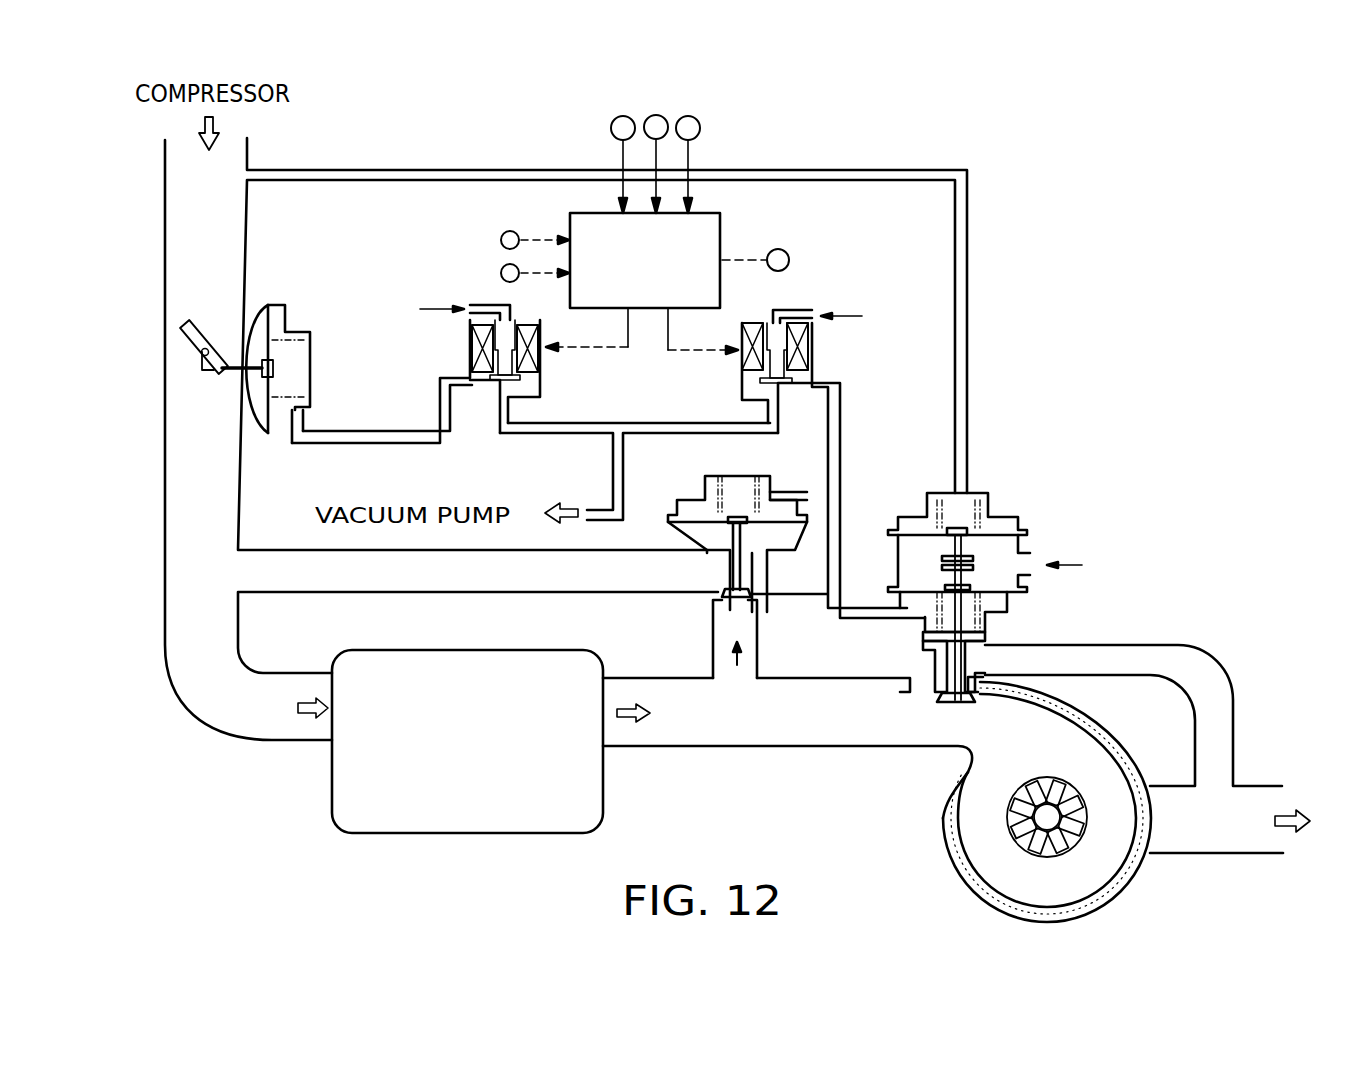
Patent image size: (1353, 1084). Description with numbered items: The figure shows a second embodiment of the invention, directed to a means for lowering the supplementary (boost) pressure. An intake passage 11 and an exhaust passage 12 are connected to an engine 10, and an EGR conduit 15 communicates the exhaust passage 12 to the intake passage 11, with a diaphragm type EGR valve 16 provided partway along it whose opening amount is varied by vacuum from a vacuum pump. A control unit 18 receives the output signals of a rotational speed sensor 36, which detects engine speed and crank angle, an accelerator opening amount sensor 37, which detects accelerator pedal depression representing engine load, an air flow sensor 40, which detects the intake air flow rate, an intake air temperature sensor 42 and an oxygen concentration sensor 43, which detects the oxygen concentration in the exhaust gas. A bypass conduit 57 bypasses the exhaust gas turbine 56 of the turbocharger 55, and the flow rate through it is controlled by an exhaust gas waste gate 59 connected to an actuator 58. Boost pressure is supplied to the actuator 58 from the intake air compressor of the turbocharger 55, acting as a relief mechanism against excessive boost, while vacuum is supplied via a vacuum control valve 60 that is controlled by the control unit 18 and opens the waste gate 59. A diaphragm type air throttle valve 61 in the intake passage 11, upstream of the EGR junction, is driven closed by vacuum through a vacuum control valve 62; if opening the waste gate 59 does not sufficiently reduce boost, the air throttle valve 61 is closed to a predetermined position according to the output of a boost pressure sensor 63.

The engine 10 is at (507, 833).
The intake passage 11 is at (168, 468).
The exhaust passage 12 is at (828, 748).
The EGR conduit 15 is at (633, 594).
The EGR valve 16 is at (768, 596).
The control unit 18 is at (728, 237).
The rotational speed sensor 36 is at (510, 231).
The accelerator opening amount sensor 37 is at (662, 115).
The air flow sensor 40 is at (612, 122).
The intake air temperature sensor 42 is at (501, 268).
The oxygen concentration sensor 43 is at (712, 130).
The turbocharger 55 is at (934, 851).
The exhaust gas turbine 56 is at (1068, 838).
The bypass conduit 57 is at (1142, 640).
The actuator 58 is at (1000, 507).
The exhaust gas waste gate 59 is at (958, 700).
The vacuum control valve 60 is at (833, 452).
The air throttle valve 61 is at (203, 323).
The vacuum control valve 62 is at (462, 345).
The boost pressure sensor 63 is at (790, 262).